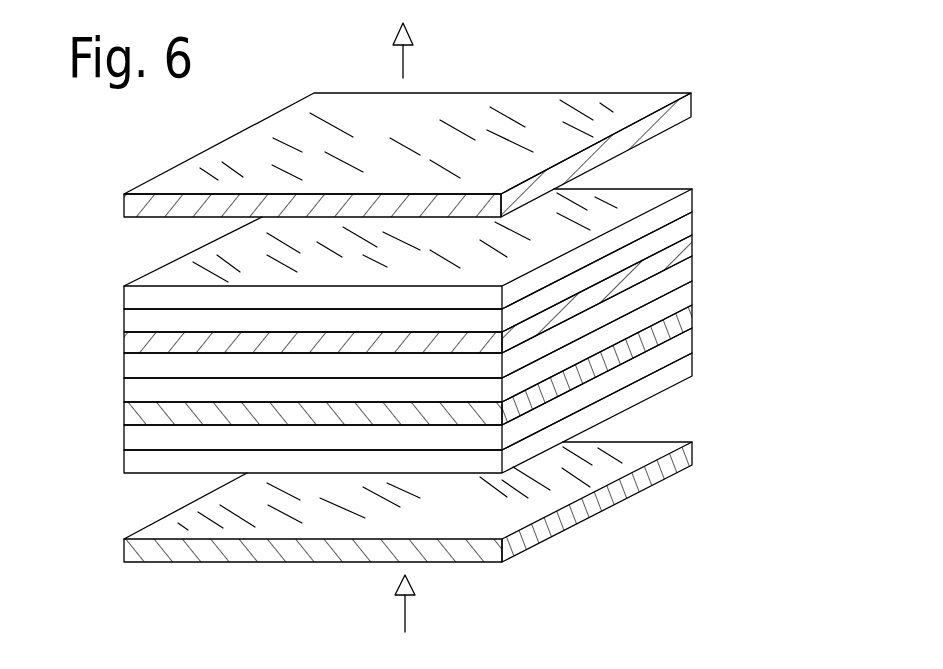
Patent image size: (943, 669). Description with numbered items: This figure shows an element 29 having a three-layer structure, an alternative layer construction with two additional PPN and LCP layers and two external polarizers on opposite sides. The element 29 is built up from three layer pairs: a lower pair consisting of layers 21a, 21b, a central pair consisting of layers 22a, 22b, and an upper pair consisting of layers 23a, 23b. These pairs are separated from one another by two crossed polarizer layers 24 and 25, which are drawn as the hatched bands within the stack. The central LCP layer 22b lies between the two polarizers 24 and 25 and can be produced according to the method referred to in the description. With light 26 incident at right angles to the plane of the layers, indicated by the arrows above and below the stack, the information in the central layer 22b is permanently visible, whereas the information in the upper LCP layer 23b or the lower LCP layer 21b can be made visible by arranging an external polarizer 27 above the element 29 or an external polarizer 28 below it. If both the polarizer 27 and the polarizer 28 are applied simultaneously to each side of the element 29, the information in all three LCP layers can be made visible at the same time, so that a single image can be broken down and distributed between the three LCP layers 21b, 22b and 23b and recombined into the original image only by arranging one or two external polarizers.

The PPN layer 21a is at (693, 365).
The lower LCP layer 21b is at (693, 338).
The PPN layer 22a is at (693, 295).
The central LCP layer 22b is at (693, 265).
The PPN layer 23a is at (693, 217).
The upper LCP layer 23b is at (693, 195).
The polarizer layer 24 is at (124, 414).
The polarizer layer 25 is at (124, 345).
The light 26 is at (403, 70).
The external polarizer 27 is at (124, 207).
The external polarizer 28 is at (125, 555).
The element 29 is at (418, 305).